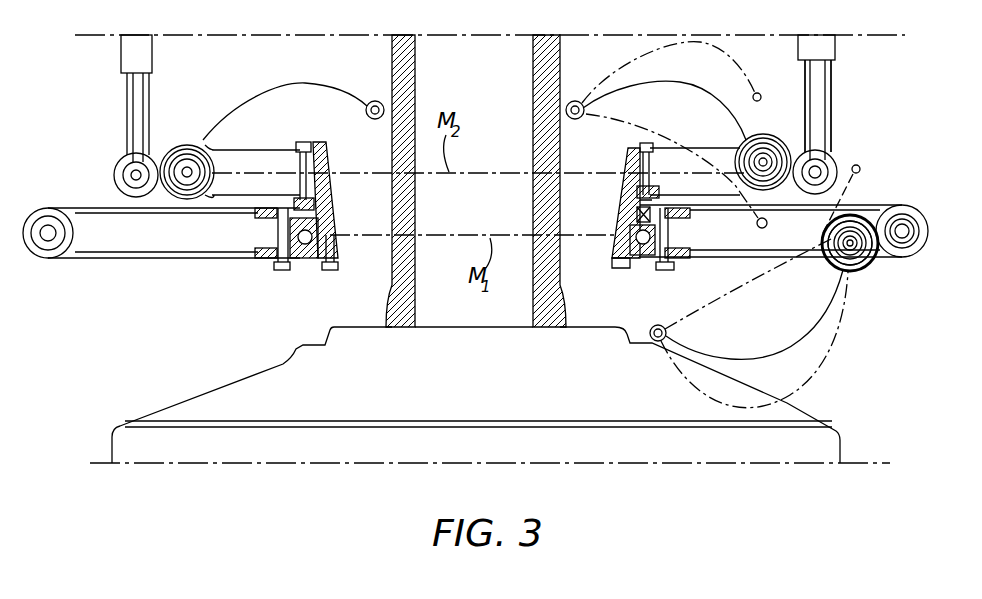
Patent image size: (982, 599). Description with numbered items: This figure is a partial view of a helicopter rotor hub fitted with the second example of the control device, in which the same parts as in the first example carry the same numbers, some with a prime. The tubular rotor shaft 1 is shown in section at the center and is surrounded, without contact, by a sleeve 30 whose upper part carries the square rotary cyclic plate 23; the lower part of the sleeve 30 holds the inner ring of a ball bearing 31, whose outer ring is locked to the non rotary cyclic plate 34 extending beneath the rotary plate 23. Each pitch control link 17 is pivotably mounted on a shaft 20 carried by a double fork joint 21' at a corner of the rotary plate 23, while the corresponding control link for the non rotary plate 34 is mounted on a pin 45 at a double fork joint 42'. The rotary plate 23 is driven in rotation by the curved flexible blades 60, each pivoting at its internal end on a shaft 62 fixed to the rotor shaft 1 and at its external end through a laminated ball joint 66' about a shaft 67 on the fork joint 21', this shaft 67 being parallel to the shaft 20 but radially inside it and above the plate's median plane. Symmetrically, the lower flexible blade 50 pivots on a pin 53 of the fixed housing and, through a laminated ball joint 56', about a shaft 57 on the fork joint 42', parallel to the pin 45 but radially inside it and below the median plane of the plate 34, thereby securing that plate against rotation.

The rotor shaft 1 is at (416, 296).
The pitch control link 17 is at (126, 108).
The shaft 20 is at (828, 172).
The double fork joint 21' is at (781, 222).
The rotary cyclic plate 23 is at (266, 144).
The sleeve 30 is at (334, 210).
The ball bearing 31 is at (304, 266).
The non rotary cyclic plate 34 is at (176, 265).
The double fork joint 42' is at (773, 216).
The pin 45 is at (915, 228).
The flexible blade 50 is at (818, 328).
The pin 53 is at (658, 324).
The ball joint 56' is at (854, 264).
The shaft 57 is at (858, 246).
The flexible blade 60 is at (307, 84).
The shaft 62 is at (366, 114).
The ball joint 66' is at (701, 183).
The shaft 67 is at (748, 183).